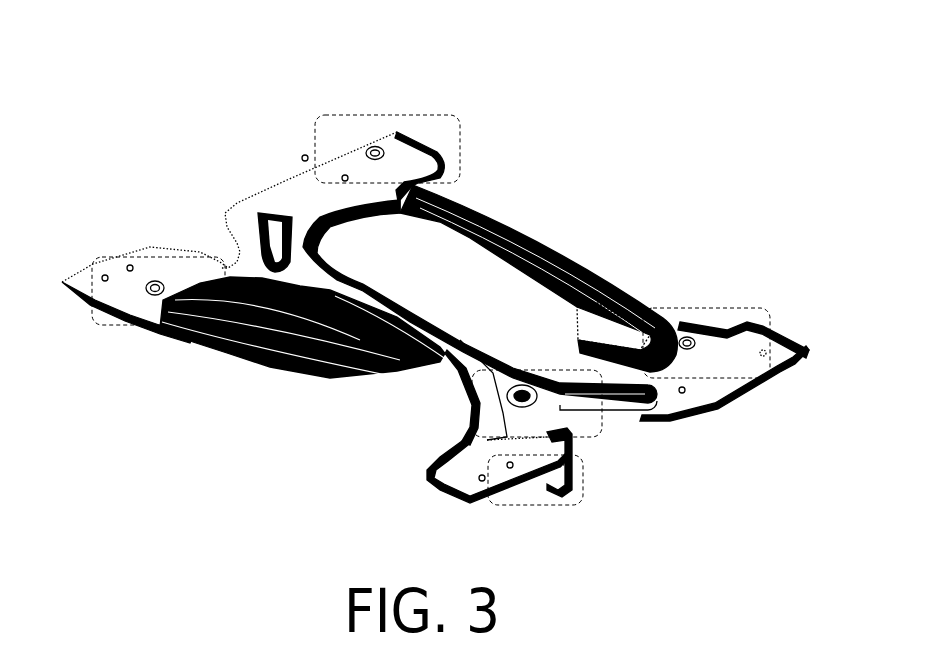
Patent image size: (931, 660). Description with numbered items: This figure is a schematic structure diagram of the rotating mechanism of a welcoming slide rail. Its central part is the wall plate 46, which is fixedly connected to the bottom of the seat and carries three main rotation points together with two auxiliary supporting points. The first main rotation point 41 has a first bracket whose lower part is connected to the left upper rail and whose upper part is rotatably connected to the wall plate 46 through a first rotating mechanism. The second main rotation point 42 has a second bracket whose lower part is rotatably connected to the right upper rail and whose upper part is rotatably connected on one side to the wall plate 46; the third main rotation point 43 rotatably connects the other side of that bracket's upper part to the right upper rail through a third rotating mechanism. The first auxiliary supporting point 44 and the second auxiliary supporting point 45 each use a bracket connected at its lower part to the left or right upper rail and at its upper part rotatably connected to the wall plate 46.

The first main rotation point 41 is at (366, 151).
The second main rotation point 42 is at (537, 401).
The third main rotation point 43 is at (525, 470).
The first auxiliary supporting point 44 is at (151, 297).
The second auxiliary supporting point 45 is at (694, 336).
The wall plate 46 is at (531, 236).